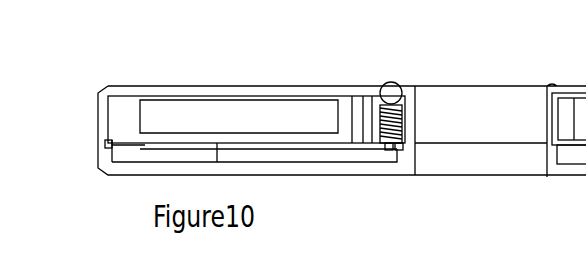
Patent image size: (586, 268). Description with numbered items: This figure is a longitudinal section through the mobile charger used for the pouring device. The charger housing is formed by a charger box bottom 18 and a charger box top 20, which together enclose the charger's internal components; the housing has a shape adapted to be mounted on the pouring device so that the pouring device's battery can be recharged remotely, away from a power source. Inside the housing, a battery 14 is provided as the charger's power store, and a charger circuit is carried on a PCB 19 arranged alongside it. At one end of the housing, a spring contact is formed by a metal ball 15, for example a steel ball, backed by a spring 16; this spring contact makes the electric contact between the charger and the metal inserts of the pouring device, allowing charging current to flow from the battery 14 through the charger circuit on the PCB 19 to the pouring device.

The charger box bottom 18 is at (98, 88).
The battery 14 is at (159, 119).
The PCB 19 is at (127, 147).
The charger box top 20 is at (100, 164).
The metal ball 15 is at (391, 91).
The spring 16 is at (400, 112).